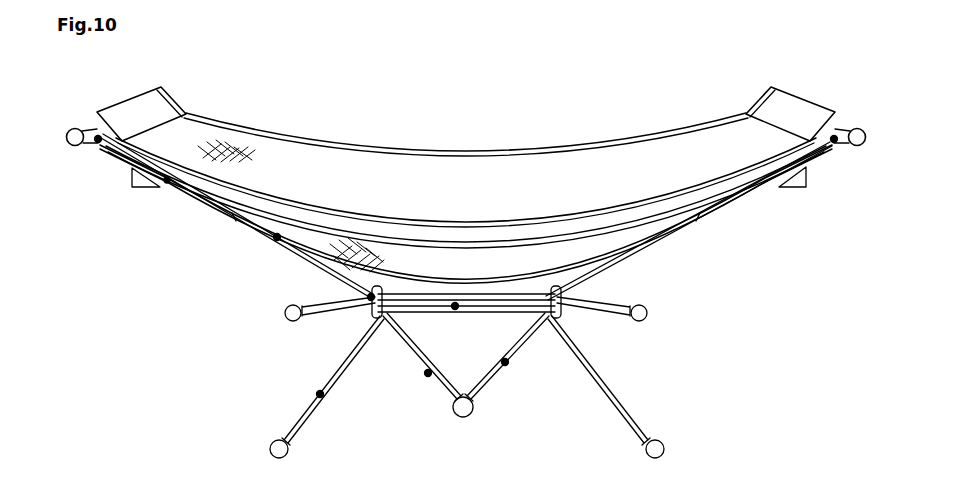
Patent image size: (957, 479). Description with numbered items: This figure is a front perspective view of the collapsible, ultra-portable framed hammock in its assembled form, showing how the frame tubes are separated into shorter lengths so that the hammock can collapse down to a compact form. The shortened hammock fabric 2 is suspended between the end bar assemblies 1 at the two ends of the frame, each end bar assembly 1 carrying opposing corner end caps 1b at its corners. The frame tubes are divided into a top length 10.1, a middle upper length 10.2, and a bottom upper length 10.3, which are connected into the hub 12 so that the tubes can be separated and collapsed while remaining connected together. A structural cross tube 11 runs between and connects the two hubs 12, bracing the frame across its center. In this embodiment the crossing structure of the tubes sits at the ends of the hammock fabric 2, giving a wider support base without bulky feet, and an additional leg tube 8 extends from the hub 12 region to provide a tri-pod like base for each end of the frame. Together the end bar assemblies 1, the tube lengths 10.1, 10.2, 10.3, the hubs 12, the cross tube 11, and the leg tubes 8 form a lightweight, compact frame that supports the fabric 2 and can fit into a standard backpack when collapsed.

The end bar assembly 1 is at (55, 151).
The corner end cap 1b is at (93, 145).
The shortened hammock fabric 2 is at (649, 152).
The leg tube 8 is at (426, 376).
The top length 10.1 is at (165, 182).
The middle upper length 10.2 is at (275, 239).
The bottom upper length 10.3 is at (318, 395).
The structural cross tube 11 is at (427, 314).
The hub 12 is at (286, 318).